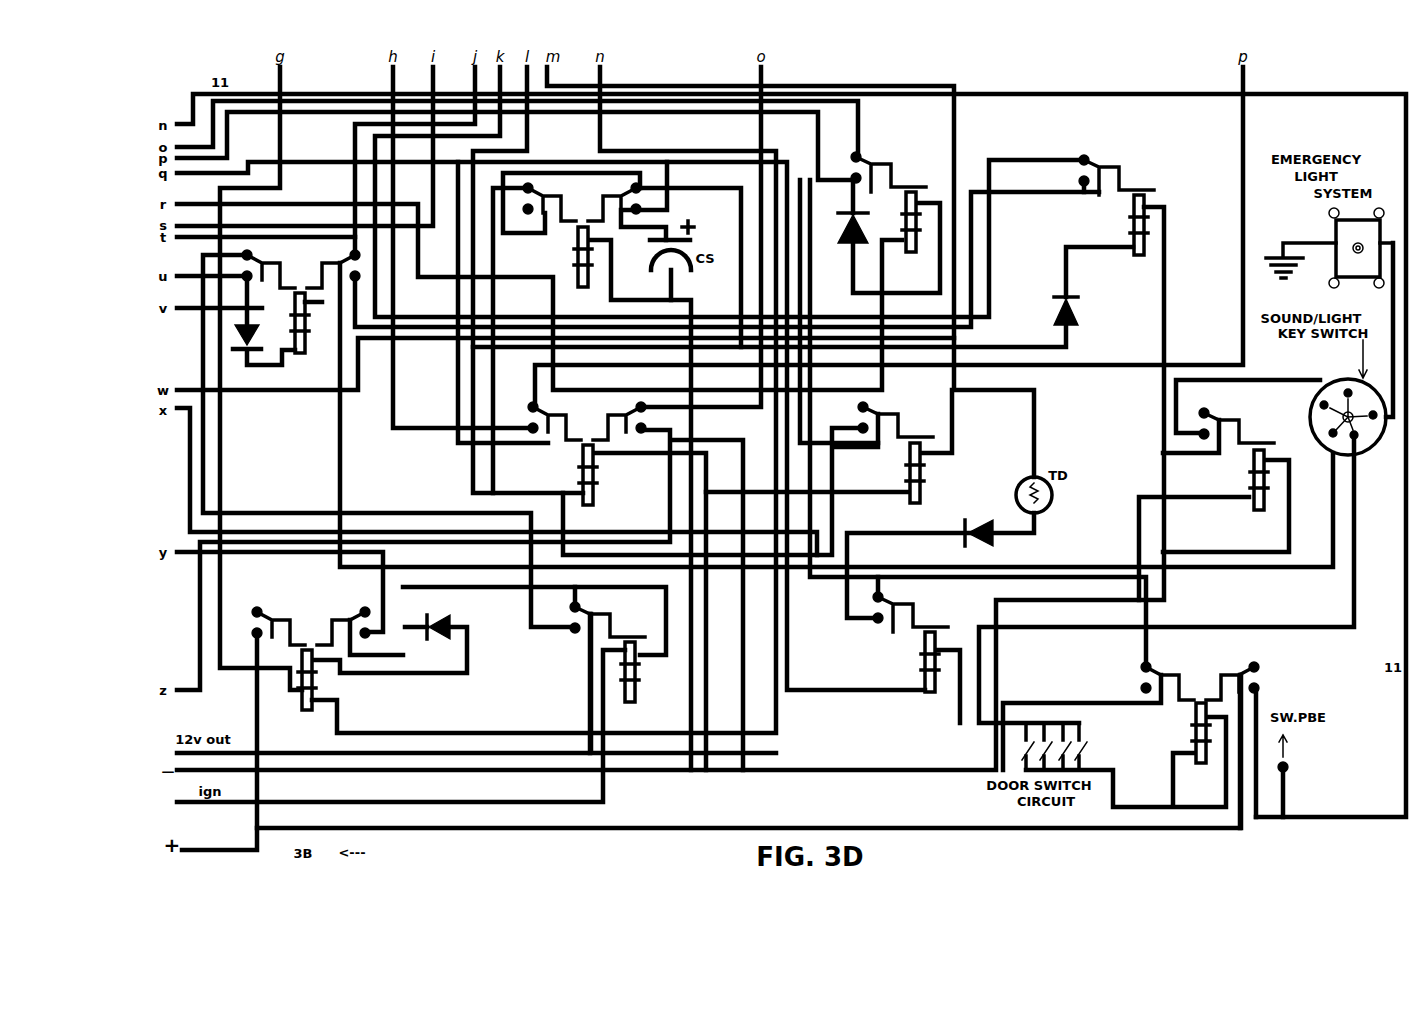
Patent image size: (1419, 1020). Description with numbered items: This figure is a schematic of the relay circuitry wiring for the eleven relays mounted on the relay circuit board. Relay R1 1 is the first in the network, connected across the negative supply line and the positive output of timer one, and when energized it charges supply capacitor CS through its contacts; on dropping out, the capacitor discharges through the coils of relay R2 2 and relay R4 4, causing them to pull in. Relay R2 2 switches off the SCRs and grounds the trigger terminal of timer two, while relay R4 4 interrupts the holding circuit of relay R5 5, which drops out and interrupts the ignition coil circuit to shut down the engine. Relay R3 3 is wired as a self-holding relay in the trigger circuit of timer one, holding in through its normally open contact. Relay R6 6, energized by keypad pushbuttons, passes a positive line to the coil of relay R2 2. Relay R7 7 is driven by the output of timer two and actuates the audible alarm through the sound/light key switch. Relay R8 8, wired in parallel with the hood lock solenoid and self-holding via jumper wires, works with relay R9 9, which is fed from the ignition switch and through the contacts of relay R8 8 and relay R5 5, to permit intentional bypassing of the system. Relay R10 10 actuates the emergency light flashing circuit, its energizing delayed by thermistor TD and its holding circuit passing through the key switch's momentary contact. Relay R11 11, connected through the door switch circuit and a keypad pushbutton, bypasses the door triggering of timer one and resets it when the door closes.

The relay DPDT-R1 1 is at (582, 241).
The relay DPDT-R2 2 is at (587, 459).
The relay SPDT-R3 3 is at (896, 216).
The relay SPDT-R4 4 is at (1124, 218).
The relay DPDT-R5 5 is at (301, 308).
The relay SPDT-R6 6 is at (903, 464).
The relay SPDT-R7 7 is at (1244, 471).
The relay DPDT-R8 8 is at (311, 664).
The relay SPDT-R9 9 is at (615, 665).
The relay SPDT-R10 10 is at (918, 656).
The relay DPDT-R11 11 is at (1200, 720).